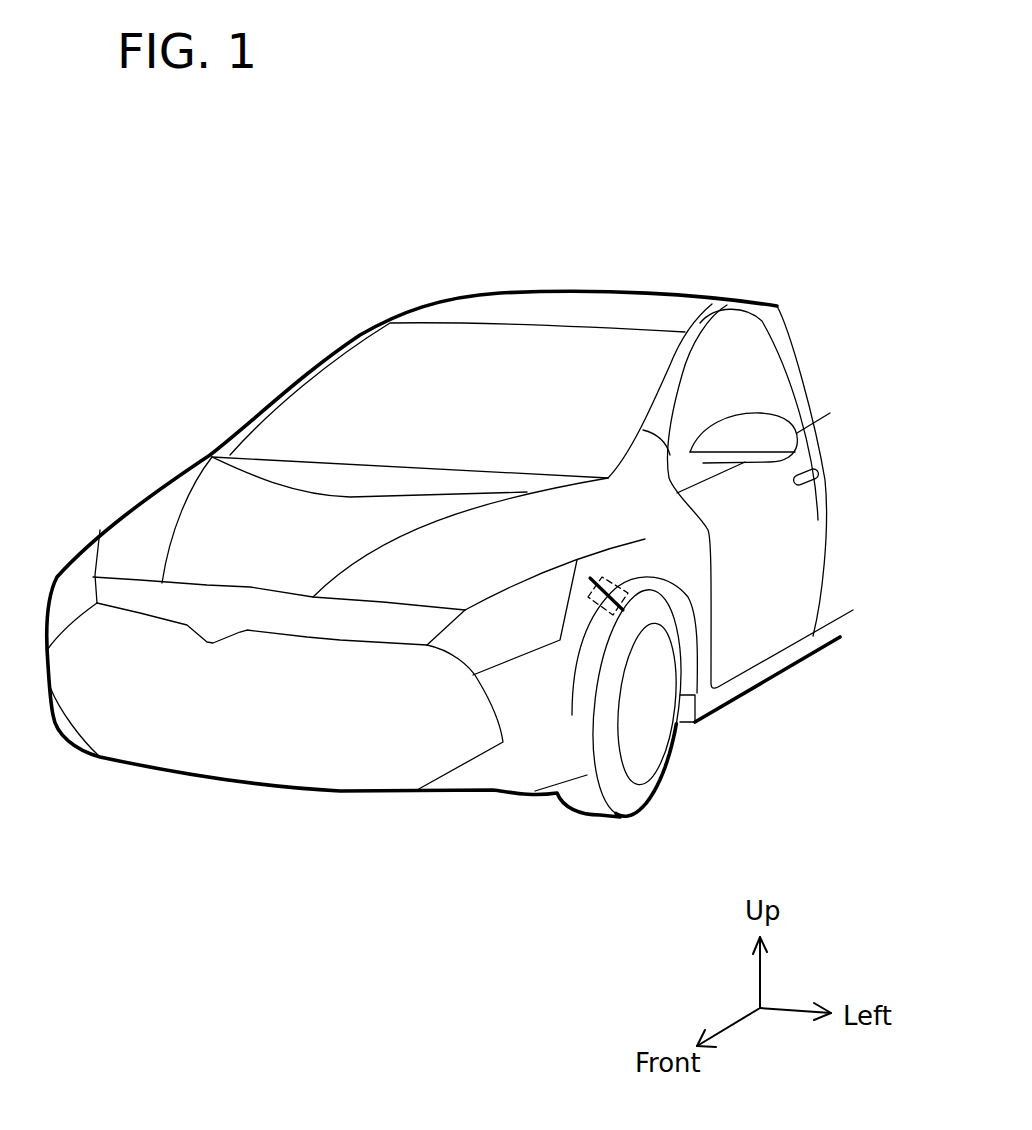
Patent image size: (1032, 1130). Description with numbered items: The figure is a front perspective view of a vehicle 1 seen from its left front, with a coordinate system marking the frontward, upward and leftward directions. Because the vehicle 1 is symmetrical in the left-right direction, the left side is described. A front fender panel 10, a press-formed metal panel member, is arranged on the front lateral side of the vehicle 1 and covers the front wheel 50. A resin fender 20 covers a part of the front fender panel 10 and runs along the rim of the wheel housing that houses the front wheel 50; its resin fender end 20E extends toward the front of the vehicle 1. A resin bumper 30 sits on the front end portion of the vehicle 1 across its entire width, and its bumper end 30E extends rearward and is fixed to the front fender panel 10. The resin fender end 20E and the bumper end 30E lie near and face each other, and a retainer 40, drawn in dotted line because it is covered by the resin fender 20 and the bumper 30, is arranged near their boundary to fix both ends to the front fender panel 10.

The vehicle 1 is at (834, 166).
The front fender panel 10 is at (660, 512).
The resin fender 20 is at (660, 553).
The resin fender end 20E is at (665, 576).
The bumper 30 is at (553, 697).
The bumper end 30E is at (572, 715).
The retainer 40 is at (621, 577).
The front wheel 50 is at (648, 730).